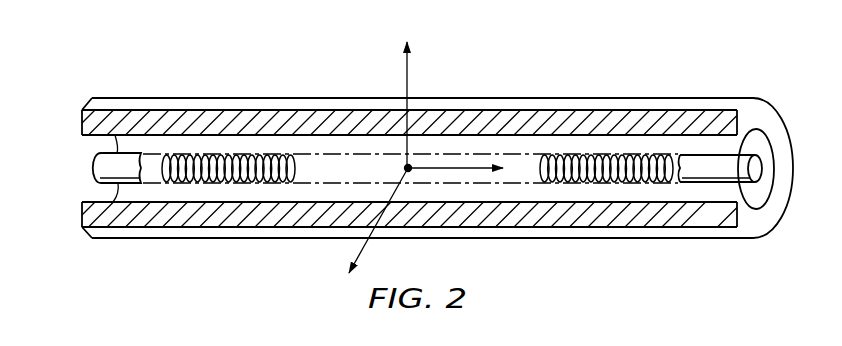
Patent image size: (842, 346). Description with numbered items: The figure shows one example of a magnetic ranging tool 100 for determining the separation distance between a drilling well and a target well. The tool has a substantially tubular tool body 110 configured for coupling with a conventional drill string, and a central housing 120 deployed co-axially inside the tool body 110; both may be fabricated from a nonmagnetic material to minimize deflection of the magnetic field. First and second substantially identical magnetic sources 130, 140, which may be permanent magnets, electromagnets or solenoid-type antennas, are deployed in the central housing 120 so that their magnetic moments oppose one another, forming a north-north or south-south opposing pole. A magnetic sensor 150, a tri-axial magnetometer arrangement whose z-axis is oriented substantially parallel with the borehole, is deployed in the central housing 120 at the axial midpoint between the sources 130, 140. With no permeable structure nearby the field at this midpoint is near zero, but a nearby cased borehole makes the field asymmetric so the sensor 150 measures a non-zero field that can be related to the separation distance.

The magnetic ranging tool 100 is at (417, 148).
The tool body 110 is at (323, 98).
The central housing 120 is at (102, 152).
The first magnetic source 130 is at (212, 155).
The second magnetic source 140 is at (592, 182).
The magnetic sensor 150 is at (405, 168).